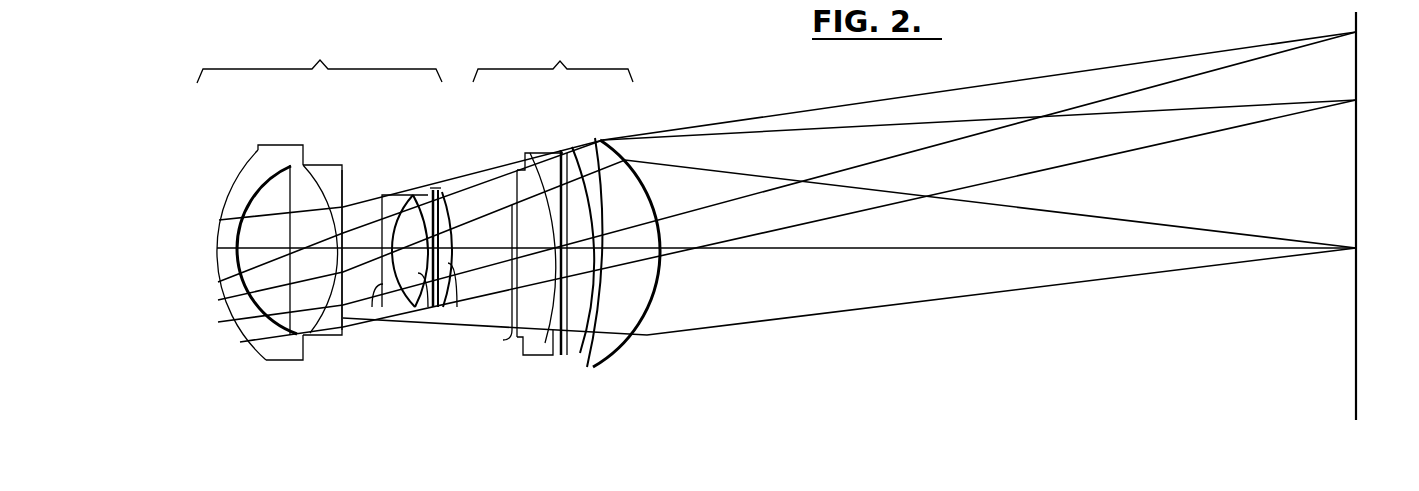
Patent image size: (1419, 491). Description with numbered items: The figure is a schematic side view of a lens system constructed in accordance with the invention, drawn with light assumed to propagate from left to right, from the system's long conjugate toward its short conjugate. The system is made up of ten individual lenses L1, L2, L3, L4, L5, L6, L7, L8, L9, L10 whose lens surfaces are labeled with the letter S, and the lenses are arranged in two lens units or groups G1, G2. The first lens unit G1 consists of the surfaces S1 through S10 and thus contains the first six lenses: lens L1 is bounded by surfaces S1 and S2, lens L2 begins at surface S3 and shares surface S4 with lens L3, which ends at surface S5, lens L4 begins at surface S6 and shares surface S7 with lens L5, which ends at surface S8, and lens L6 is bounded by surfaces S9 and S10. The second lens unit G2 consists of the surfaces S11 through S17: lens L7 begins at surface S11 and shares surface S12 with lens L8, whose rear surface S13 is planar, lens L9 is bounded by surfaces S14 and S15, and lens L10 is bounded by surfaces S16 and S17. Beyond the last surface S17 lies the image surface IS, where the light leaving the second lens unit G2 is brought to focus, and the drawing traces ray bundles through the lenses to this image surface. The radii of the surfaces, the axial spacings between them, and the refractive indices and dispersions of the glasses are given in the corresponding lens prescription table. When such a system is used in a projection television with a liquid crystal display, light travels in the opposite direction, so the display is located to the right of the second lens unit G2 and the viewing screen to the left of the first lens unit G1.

The lens L1 is at (207, 248).
The lens L2 is at (237, 241).
The lens L3 is at (298, 248).
The lens L4 is at (384, 249).
The lens L5 is at (434, 256).
The lens L6 is at (468, 233).
The lens L7 is at (489, 236).
The lens L8 is at (518, 271).
The lens L9 is at (603, 258).
The lens L10 is at (658, 227).
The lens surface S1 is at (217, 260).
The lens surface S2 is at (250, 315).
The lens surface S3 is at (280, 330).
The lens surface S4 is at (267, 356).
The lens surface S5 is at (340, 330).
The lens surface S6 is at (372, 300).
The lens surface S7 is at (394, 290).
The lens surface S8 is at (427, 300).
The lens surface S9 is at (447, 320).
The lens surface S10 is at (460, 292).
The lens surface S11 is at (512, 227).
The lens surface S12 is at (523, 330).
The lens surface S13 is at (545, 345).
The lens surface S14 is at (553, 357).
The lens surface S15 is at (573, 357).
The lens surface S16 is at (647, 335).
The lens surface S17 is at (655, 295).
The first lens unit G1 is at (319, 59).
The second lens unit G2 is at (553, 59).
The image surface IS is at (1356, 409).